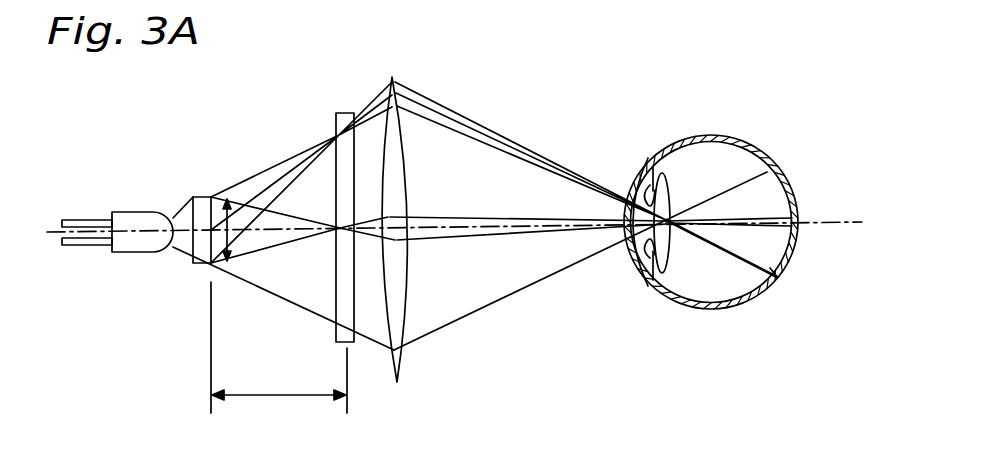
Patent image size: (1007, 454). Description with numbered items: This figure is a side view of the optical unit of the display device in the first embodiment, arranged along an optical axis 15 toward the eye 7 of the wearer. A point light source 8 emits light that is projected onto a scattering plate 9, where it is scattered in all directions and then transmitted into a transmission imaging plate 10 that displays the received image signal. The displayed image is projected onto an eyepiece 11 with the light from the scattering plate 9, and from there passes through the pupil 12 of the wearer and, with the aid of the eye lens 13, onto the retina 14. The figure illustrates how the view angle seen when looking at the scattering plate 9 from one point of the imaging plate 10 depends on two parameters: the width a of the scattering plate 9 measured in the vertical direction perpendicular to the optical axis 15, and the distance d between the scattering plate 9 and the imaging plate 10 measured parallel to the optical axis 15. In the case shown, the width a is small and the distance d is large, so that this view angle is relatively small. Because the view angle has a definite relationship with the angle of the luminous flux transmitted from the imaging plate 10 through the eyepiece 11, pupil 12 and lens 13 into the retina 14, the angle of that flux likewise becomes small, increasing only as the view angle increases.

The eye 7 is at (738, 138).
The point light source 8 is at (145, 212).
The scattering plate 9 is at (205, 196).
The transmission imaging plate 10 is at (341, 112).
The eyepiece 11 is at (397, 77).
The pupil 12 is at (628, 190).
The lens 13 is at (670, 255).
The retina 14 is at (767, 243).
The optical axis 15 is at (832, 220).
The length of the scattering plate a is at (247, 213).
The distance between the scattering plate and the imaging plate d is at (279, 347).